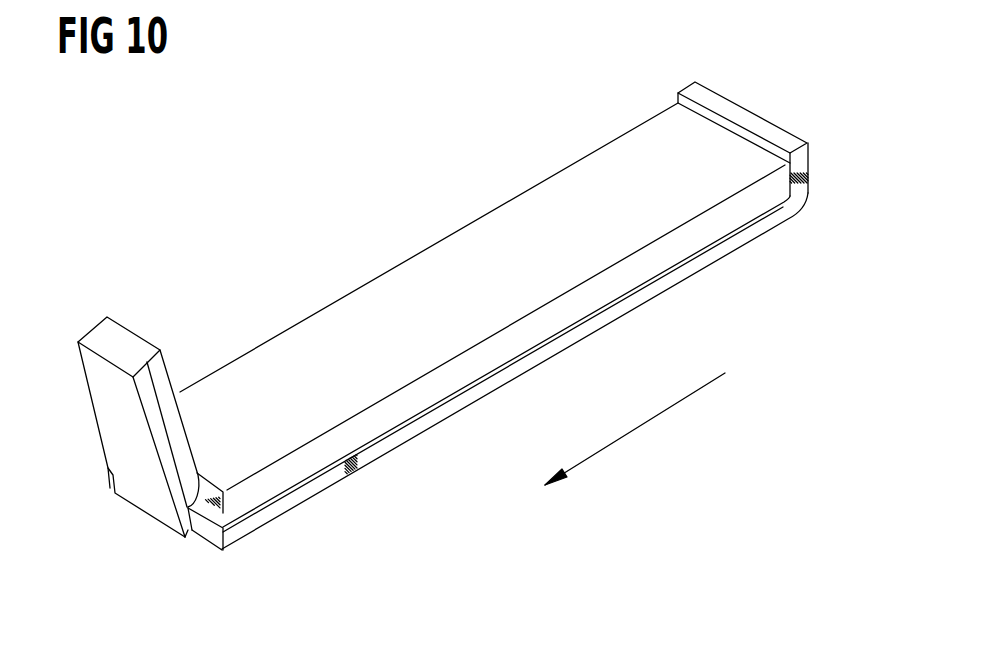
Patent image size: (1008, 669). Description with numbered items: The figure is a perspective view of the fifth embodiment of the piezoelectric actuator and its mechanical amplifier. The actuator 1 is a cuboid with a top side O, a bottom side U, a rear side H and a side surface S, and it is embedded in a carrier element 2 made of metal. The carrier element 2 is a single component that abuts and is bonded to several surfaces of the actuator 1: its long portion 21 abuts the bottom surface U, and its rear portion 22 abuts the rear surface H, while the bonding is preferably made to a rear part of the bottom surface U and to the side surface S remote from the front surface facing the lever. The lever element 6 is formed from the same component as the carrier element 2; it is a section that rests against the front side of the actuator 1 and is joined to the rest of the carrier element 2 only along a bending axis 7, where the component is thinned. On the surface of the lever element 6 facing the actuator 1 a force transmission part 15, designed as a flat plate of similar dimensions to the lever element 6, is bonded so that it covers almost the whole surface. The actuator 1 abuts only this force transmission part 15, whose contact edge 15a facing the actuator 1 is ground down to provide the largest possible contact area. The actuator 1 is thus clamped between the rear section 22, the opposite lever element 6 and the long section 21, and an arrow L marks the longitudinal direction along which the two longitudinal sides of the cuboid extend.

The piezoelectric actuator 1 is at (482, 296).
The carrier element 2 is at (527, 299).
The long portion of the carrier element 21 is at (498, 371).
The rear portion of the carrier element 22 is at (772, 125).
The lever element 6 is at (183, 435).
The bending axis 7 is at (188, 537).
The force transmission part 15 is at (216, 419).
The contact edge 15a is at (222, 512).
The top side O is at (485, 225).
The bottom side U is at (356, 476).
The side surface S is at (453, 392).
The rear side H is at (808, 179).
The longitudinal direction L is at (638, 430).